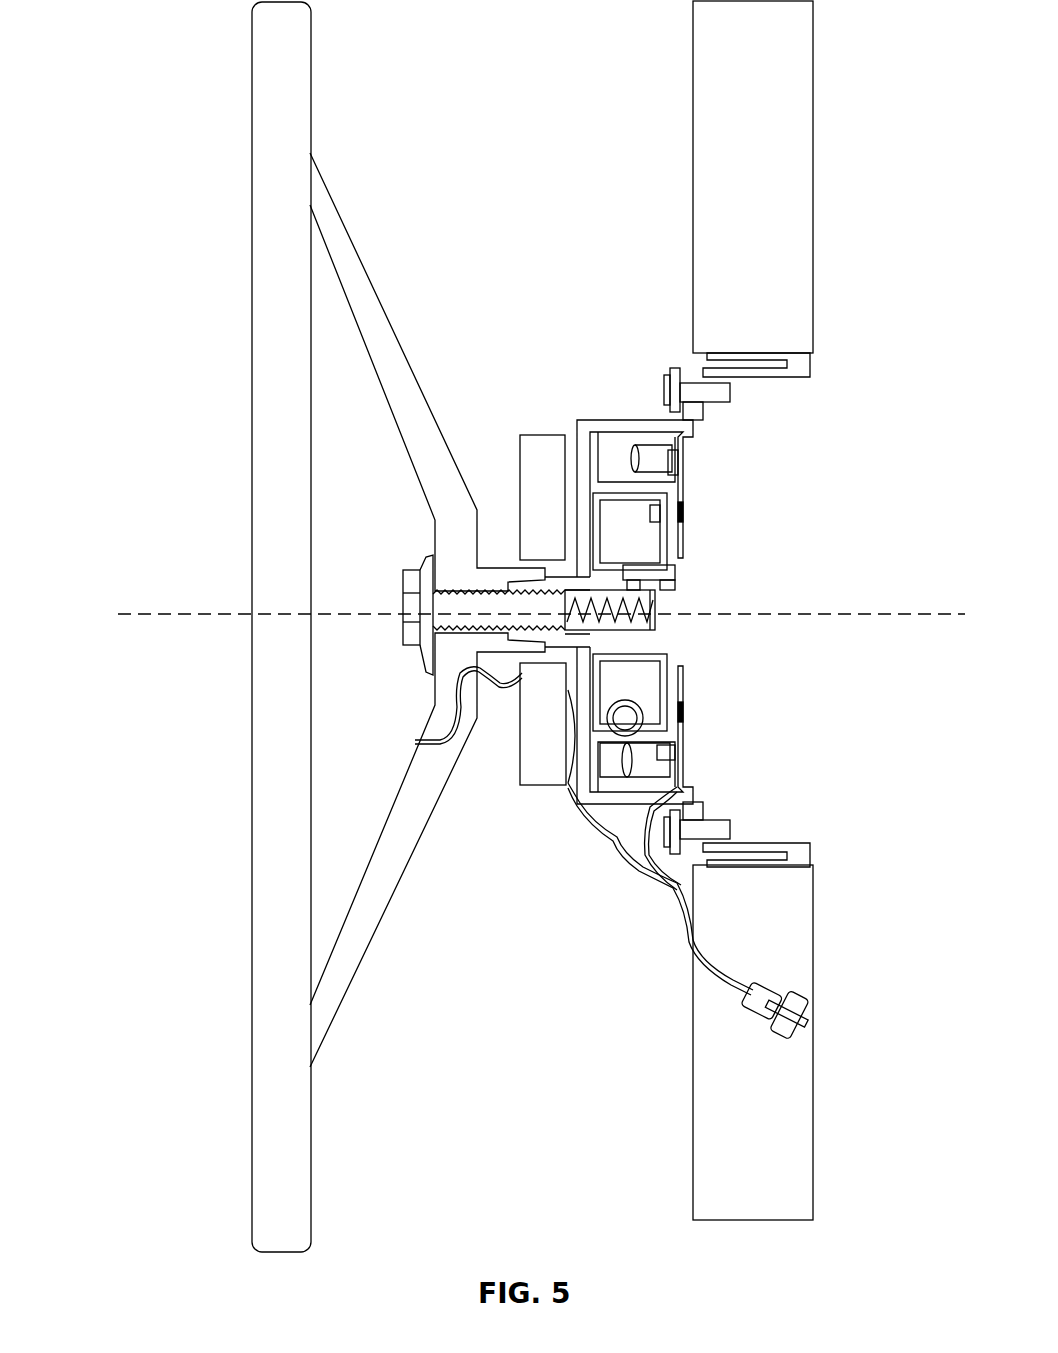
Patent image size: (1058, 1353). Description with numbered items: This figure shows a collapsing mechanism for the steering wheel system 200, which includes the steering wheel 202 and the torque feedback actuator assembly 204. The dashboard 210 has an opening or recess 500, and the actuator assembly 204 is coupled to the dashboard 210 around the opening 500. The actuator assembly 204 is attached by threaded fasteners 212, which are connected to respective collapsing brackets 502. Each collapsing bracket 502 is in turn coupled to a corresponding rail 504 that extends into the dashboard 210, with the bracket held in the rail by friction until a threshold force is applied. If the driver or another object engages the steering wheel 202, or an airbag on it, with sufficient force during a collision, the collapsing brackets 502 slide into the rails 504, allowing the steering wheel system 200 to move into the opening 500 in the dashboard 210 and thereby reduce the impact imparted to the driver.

The steering wheel system 200 is at (120, 30).
The steering wheel 202 is at (265, 74).
The torque feedback actuator assembly 204 is at (548, 358).
The dashboard 210 is at (710, 95).
The threaded fasteners 212 is at (665, 378).
The opening 500 is at (822, 488).
The collapsing brackets 502 is at (698, 370).
The rails 504 is at (772, 377).